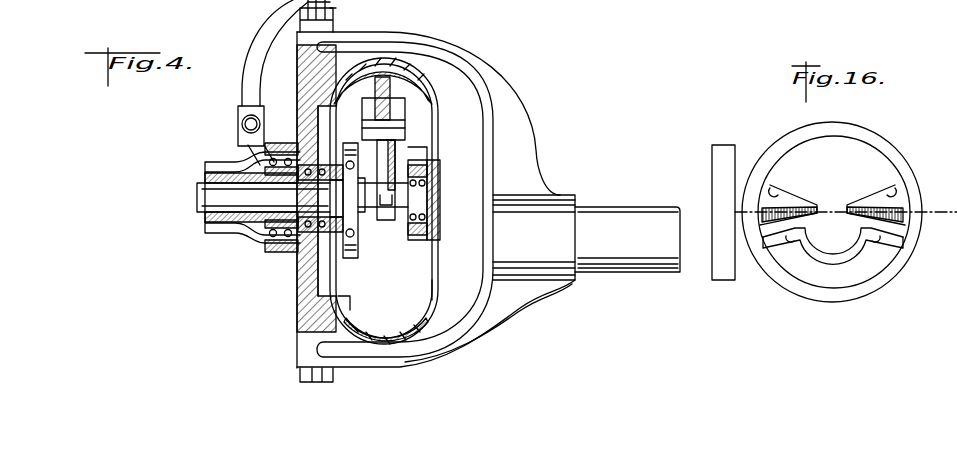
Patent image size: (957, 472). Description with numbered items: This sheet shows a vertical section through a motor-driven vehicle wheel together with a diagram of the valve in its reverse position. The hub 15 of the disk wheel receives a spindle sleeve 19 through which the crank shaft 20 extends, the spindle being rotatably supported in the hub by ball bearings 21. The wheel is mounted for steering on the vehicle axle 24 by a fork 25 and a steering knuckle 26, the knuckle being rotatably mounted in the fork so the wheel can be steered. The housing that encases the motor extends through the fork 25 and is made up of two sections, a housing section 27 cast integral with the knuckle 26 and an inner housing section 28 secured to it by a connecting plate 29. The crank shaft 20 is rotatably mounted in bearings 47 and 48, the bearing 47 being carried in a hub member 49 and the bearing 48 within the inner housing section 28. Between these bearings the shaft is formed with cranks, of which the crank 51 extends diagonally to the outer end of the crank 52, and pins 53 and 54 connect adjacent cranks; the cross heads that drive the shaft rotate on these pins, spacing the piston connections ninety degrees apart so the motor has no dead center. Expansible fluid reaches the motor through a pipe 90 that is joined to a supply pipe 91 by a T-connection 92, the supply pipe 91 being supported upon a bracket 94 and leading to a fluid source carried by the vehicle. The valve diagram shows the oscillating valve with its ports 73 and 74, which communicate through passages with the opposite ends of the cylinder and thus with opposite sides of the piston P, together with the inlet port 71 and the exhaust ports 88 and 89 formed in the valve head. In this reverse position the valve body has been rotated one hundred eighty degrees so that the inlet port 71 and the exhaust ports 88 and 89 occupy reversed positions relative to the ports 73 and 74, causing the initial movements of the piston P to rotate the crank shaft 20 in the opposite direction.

In FIG. 4, the hub 15 is at (220, 166).
In FIG. 4, the spindle sleeve 19 is at (205, 226).
In FIG. 4, the crank shaft 20 is at (238, 200).
In FIG. 4, the ball bearings 21 is at (323, 240).
In FIG. 4, the vehicle axle 24 is at (648, 210).
In FIG. 4, the fork 25 is at (518, 165).
In FIG. 4, the steering knuckle 26 is at (300, 310).
In FIG. 4, the housing section 27 is at (357, 326).
In FIG. 4, the inner housing section 28 is at (420, 324).
In FIG. 4, the connecting plate 29 is at (378, 330).
In FIG. 4, the bearing 47 is at (318, 170).
In FIG. 4, the bearing 48 is at (440, 155).
In FIG. 4, the hub member 49 is at (322, 122).
In FIG. 4, the crank 51 is at (372, 66).
In FIG. 4, the crank 52 is at (403, 125).
In FIG. 4, the pin 53 is at (364, 223).
In FIG. 4, the pin 54 is at (390, 118).
In FIG. 16, the inlet port 71 is at (890, 190).
In FIG. 16, the port 73 is at (912, 205).
In FIG. 16, the port 74 is at (744, 235).
In FIG. 16, the exhaust port 88 is at (882, 256).
In FIG. 16, the exhaust port 89 is at (787, 232).
In FIG. 4, the pipe 90 is at (248, 145).
In FIG. 4, the supply pipe 91 is at (278, 18).
In FIG. 4, the T-connection 92 is at (242, 118).
In FIG. 4, the bracket 94 is at (335, 8).
In FIG. 16, the piston P is at (714, 153).